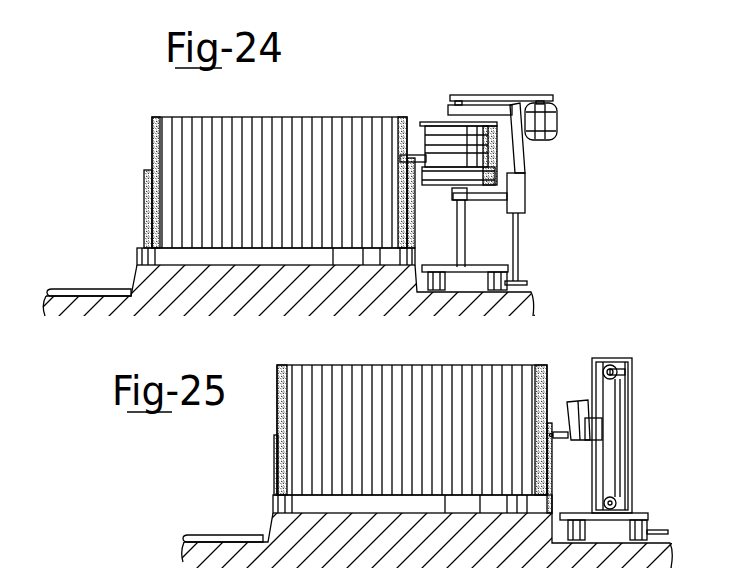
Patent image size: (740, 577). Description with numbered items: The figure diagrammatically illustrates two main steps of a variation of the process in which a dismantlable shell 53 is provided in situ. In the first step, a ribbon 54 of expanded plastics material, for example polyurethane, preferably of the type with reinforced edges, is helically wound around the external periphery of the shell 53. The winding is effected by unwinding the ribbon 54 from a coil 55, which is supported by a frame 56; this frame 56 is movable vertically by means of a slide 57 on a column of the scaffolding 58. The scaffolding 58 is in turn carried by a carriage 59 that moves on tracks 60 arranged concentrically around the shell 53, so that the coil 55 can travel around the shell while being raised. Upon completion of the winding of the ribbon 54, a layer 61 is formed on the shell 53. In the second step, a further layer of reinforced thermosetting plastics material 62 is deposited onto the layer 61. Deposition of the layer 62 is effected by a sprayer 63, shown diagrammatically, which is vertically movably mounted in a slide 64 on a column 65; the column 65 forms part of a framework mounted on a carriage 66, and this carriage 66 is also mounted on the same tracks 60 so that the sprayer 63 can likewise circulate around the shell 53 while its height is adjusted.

In FIG. 24, the shell 53 is at (157, 141).
In FIG. 25, the shell 53 is at (290, 393).
In FIG. 24, the ribbon 54 is at (405, 158).
In FIG. 24, the coil 55 is at (440, 125).
In FIG. 24, the frame 56 is at (498, 200).
In FIG. 24, the slide 57 is at (516, 188).
In FIG. 24, the scaffolding 58 is at (516, 155).
In FIG. 24, the carriage 59 is at (490, 267).
In FIG. 24, the tracks 60 is at (123, 292).
In FIG. 25, the tracks 60 is at (257, 540).
In FIG. 24, the layer 61 is at (414, 230).
In FIG. 25, the layer 61 is at (287, 362).
In FIG. 25, the layer of reinforced thermosetting plastics material 62 is at (277, 453).
In FIG. 25, the sprayer 63 is at (577, 412).
In FIG. 25, the slide 64 is at (603, 428).
In FIG. 25, the column 65 is at (593, 372).
In FIG. 25, the carriage 66 is at (630, 513).